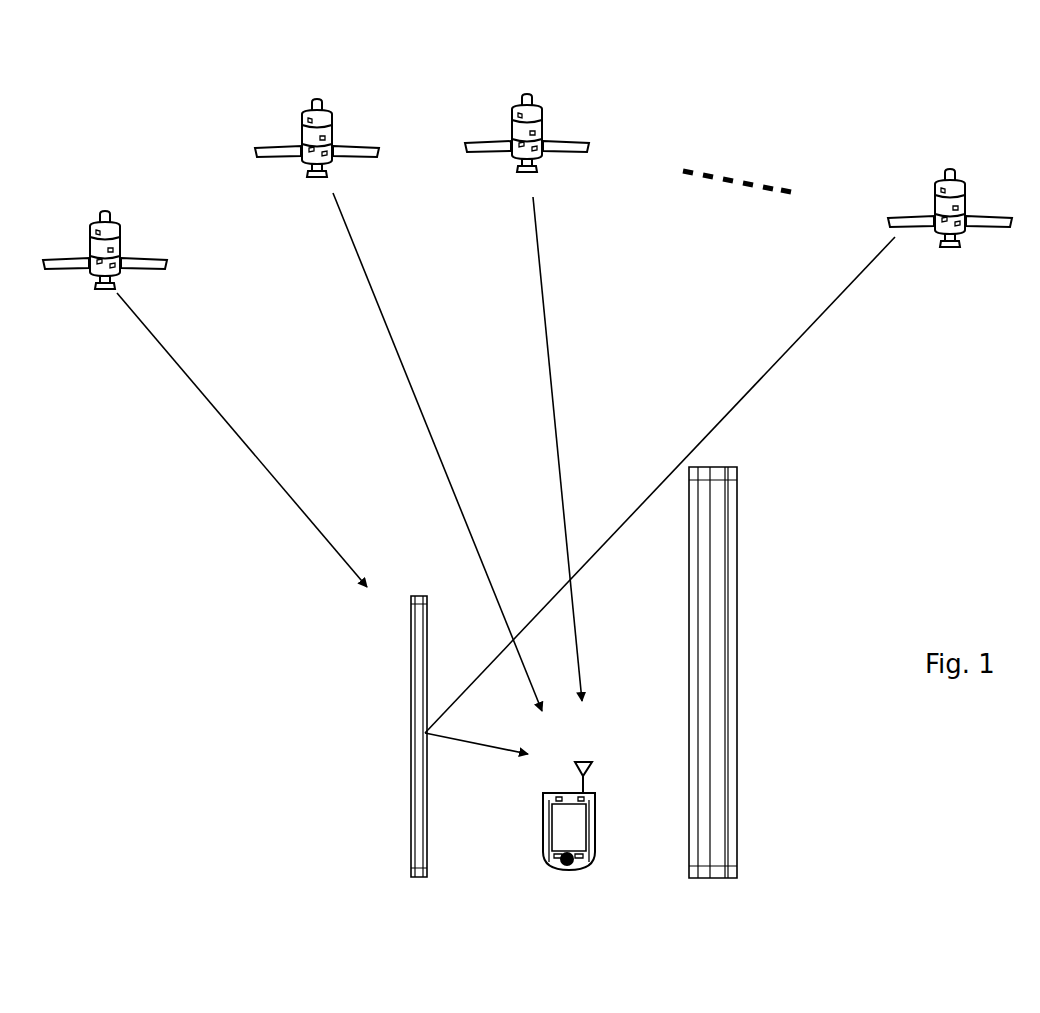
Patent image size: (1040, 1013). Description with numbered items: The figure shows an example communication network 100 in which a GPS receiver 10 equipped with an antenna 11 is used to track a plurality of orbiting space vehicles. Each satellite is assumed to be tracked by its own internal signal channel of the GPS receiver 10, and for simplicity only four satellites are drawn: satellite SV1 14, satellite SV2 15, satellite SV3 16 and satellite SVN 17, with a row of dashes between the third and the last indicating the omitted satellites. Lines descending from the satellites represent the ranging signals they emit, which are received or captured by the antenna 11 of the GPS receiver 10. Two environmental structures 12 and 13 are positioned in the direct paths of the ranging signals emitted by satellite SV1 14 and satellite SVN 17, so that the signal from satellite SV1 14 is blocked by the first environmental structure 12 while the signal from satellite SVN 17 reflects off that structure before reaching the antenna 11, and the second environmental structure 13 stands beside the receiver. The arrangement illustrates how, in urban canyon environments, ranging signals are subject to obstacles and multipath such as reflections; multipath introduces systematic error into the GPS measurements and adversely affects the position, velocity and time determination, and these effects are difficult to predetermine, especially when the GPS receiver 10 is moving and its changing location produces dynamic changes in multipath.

The communication network 100 is at (180, 96).
The GPS receiver 10 is at (543, 828).
The antenna 11 is at (592, 766).
The environmental structure 12 is at (410, 728).
The environmental structure 13 is at (737, 607).
The satellite SV1 14 is at (75, 266).
The satellite SV2 15 is at (333, 152).
The satellite SV3 16 is at (543, 152).
The satellite SVN 17 is at (935, 183).